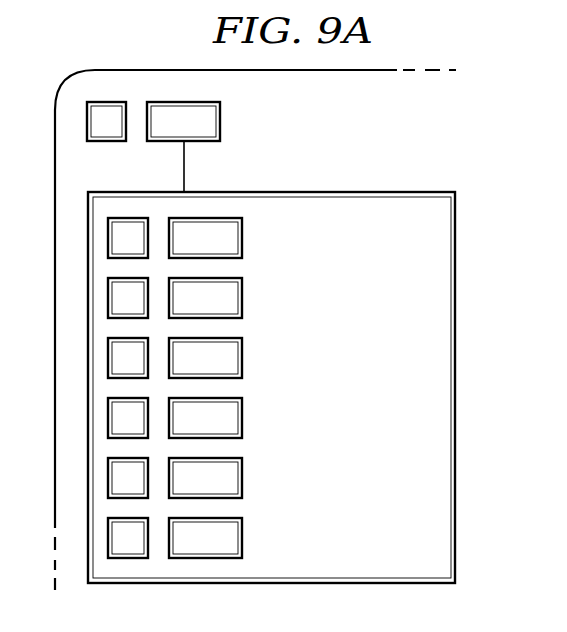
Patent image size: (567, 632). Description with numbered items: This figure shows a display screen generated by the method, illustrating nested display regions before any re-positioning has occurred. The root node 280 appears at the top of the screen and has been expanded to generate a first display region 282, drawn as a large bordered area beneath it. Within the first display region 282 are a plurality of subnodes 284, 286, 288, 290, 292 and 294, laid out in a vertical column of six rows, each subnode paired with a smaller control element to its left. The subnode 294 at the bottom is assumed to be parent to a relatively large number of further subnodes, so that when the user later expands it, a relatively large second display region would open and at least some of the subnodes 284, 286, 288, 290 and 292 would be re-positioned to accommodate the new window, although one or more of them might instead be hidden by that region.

The root node 280 is at (322, 142).
The first display region 282 is at (388, 400).
The subnode 284 is at (242, 232).
The subnode 286 is at (242, 292).
The subnode 288 is at (242, 352).
The subnode 290 is at (242, 423).
The subnode 292 is at (242, 483).
The subnode 294 is at (242, 543).